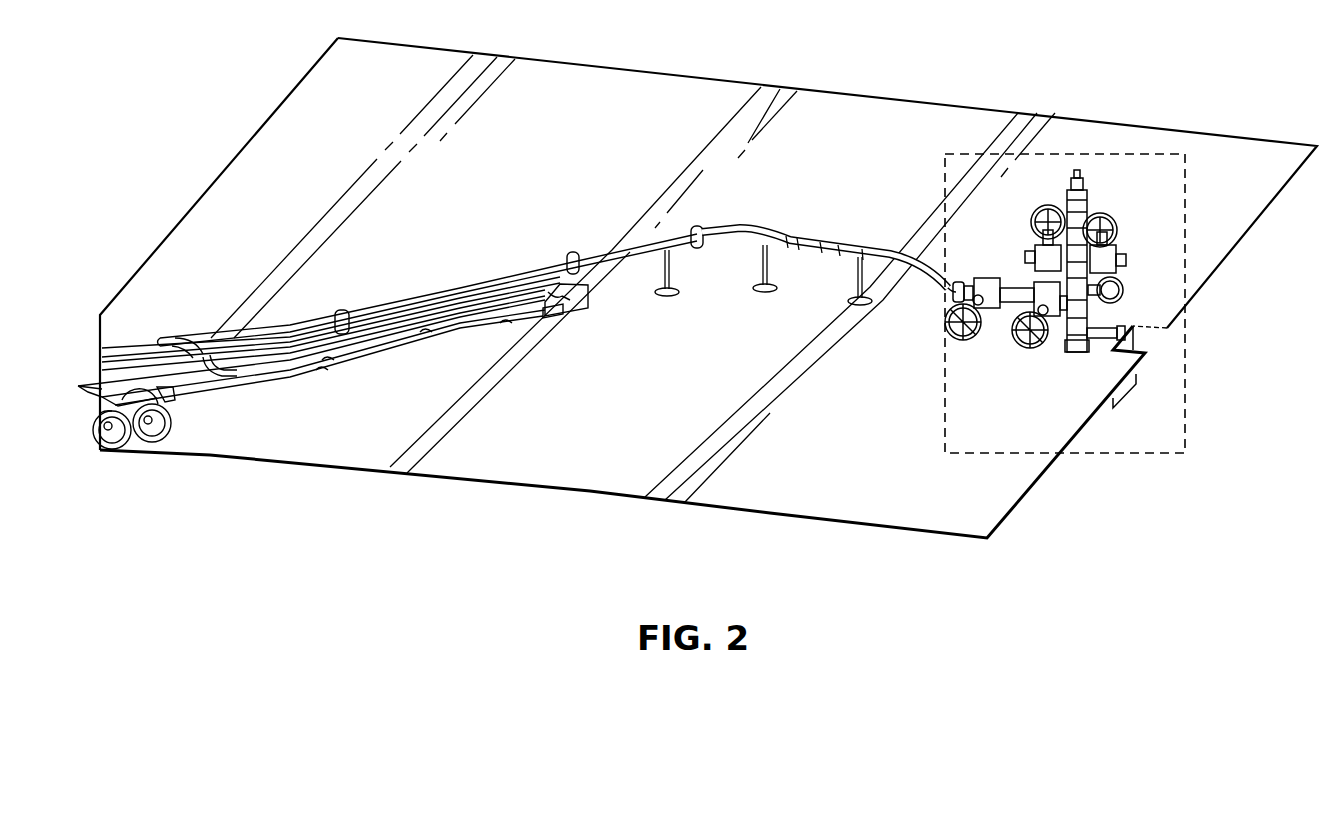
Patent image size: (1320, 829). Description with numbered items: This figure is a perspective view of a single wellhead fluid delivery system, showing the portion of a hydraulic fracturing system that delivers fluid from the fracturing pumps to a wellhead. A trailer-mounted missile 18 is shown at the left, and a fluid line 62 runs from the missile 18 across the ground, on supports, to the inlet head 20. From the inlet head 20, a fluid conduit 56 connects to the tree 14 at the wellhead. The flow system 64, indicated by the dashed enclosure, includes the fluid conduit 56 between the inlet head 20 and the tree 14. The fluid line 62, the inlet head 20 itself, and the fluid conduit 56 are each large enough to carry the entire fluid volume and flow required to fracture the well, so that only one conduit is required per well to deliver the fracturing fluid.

The tree 14 is at (1100, 211).
The missile 18 is at (495, 283).
The inlet head 20 is at (947, 283).
The fluid conduit 56 is at (996, 342).
The fluid line 62 is at (786, 237).
The flow system 64 is at (1185, 362).